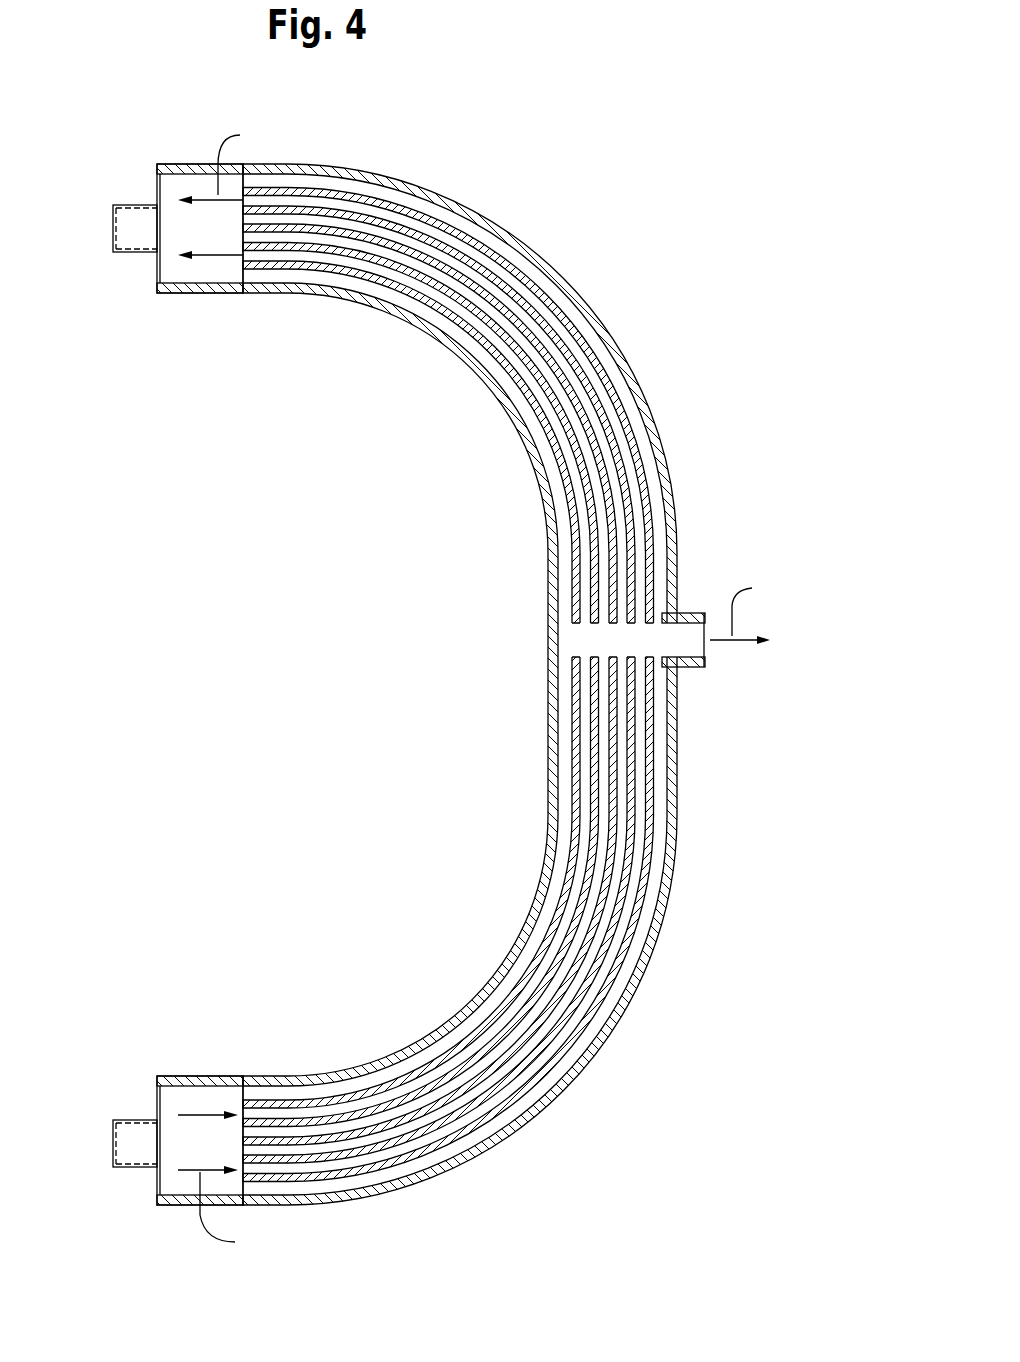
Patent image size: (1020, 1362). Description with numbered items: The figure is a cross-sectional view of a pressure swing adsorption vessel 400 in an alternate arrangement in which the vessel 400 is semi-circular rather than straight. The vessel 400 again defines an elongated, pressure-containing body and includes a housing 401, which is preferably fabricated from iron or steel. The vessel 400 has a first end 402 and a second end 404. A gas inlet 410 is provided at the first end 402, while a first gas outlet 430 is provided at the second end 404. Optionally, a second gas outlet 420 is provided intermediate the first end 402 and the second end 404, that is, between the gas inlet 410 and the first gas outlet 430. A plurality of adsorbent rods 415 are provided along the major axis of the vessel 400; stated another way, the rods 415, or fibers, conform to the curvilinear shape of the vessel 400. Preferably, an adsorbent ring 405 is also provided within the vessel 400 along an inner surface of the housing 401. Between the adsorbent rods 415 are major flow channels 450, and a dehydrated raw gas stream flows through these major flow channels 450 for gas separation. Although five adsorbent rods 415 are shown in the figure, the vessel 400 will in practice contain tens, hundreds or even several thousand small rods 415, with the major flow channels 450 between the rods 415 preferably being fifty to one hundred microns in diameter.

The pressure swing adsorption vessel 400 is at (660, 178).
The housing 401 is at (547, 602).
The first end 402 is at (227, 1086).
The second end 404 is at (237, 275).
The adsorbent ring 405 is at (553, 270).
The gas inlet 410 is at (133, 1120).
The adsorbent rods 415 is at (593, 390).
The second gas outlet 420 is at (693, 612).
The first gas outlet 430 is at (140, 203).
The major flow channels 450 is at (390, 290).